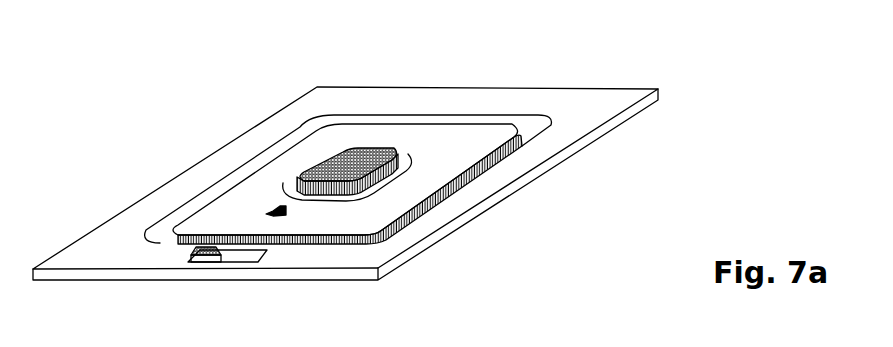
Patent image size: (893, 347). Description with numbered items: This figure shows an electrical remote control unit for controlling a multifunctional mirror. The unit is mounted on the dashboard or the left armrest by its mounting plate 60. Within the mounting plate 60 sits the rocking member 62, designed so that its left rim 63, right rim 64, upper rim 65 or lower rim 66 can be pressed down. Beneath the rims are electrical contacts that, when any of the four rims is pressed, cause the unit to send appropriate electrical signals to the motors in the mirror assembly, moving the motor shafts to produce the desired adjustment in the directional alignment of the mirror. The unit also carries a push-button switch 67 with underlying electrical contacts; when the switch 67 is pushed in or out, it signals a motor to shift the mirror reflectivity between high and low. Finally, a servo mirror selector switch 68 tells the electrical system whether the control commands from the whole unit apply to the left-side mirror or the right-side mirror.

The mounting plate 60 is at (100, 240).
The rocking member 62 is at (505, 132).
The left rim 63 is at (233, 185).
The right rim 64 is at (421, 185).
The upper rim 65 is at (428, 133).
The lower rim 66 is at (340, 228).
The push-button switch 67 is at (343, 158).
The servo mirror selector switch 68 is at (215, 257).